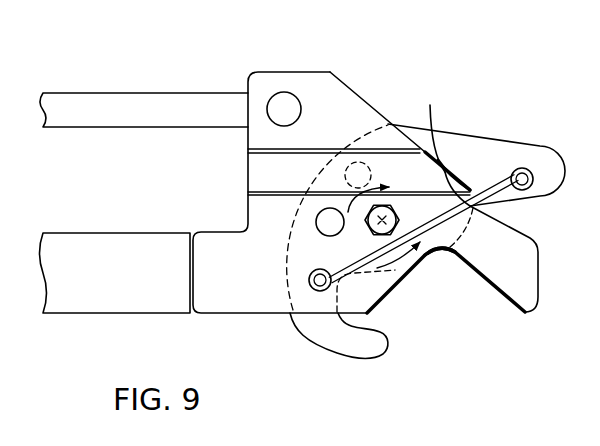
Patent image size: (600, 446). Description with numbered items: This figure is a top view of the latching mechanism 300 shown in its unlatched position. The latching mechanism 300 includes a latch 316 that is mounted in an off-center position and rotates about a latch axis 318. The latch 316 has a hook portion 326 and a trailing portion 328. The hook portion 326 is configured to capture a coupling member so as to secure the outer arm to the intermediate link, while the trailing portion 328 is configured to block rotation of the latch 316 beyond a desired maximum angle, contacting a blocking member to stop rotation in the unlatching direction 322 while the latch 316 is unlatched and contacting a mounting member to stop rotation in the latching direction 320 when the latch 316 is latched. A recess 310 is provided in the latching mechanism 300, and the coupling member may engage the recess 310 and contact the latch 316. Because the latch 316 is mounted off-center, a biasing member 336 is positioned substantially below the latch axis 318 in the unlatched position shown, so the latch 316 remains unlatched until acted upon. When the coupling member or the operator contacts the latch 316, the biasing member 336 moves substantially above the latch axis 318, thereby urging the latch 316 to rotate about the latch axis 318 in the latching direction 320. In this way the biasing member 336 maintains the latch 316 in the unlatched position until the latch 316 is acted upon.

The latching mechanism 300 is at (236, 52).
The recess 310 is at (473, 338).
The latch 316 is at (400, 115).
The latch axis 318 is at (378, 221).
The latching direction 320 is at (405, 262).
The unlatching direction 322 is at (348, 212).
The hook portion 326 is at (360, 360).
The trailing portion 328 is at (472, 132).
The biasing member 336 is at (440, 134).